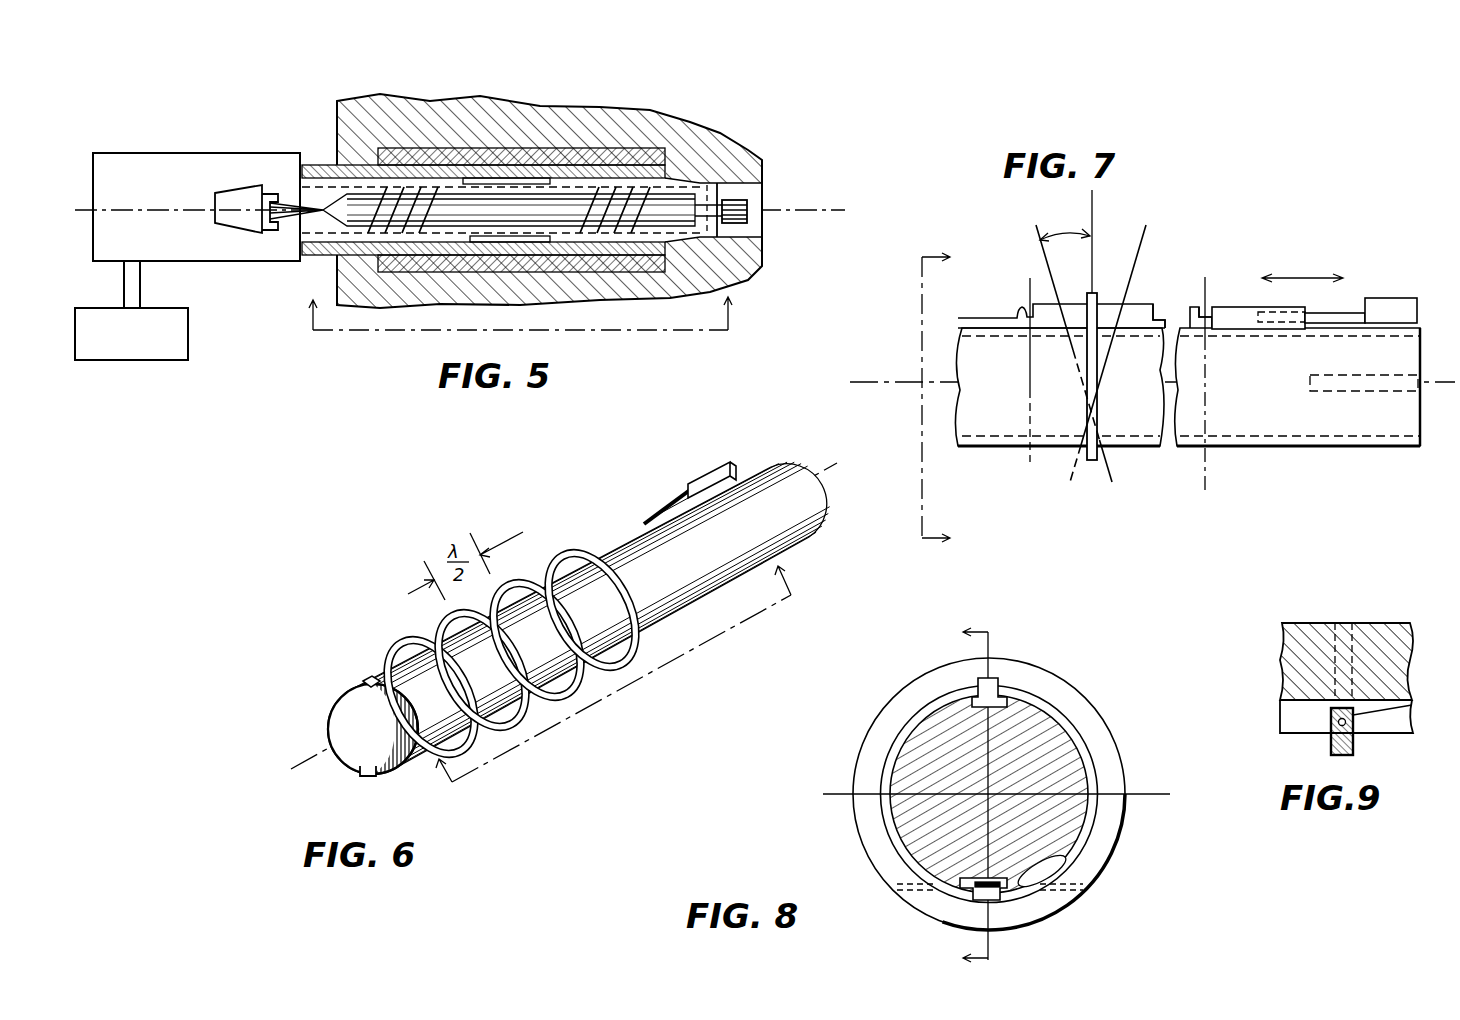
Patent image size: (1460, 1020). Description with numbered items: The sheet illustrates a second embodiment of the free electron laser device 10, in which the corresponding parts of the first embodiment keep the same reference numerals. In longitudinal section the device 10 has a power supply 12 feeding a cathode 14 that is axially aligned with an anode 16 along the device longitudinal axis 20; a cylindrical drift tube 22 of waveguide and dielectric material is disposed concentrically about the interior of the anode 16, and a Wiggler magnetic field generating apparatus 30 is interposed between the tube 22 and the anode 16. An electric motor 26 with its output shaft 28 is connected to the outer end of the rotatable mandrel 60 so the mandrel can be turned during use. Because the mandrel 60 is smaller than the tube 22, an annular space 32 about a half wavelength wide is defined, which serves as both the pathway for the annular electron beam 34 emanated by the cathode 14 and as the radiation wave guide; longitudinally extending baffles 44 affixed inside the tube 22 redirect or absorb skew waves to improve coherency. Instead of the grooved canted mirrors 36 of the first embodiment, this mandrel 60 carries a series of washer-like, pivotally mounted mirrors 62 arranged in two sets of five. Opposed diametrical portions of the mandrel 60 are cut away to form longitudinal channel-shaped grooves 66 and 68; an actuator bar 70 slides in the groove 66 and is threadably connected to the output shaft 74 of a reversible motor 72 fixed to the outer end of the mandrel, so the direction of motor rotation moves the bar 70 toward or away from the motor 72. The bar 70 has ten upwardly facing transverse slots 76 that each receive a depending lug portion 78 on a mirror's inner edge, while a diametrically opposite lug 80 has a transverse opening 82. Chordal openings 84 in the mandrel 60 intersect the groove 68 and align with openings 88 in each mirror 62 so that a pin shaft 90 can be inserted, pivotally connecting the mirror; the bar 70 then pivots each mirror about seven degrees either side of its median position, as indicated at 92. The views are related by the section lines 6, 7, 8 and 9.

In FIG. 5, the free electron laser device 10 is at (298, 101).
In FIG. 5, the power supply 12 is at (142, 342).
In FIG. 5, the cathode 14 is at (218, 205).
In FIG. 5, the anode 16 is at (603, 115).
In FIG. 5, the device longitudinal axis 20 is at (823, 196).
In FIG. 5, the cylindrical drift tube 22 is at (328, 258).
In FIG. 5, the electric motor 26 is at (760, 186).
In FIG. 5, the output shaft 28 is at (748, 215).
In FIG. 5, the Wiggler magnetic field generating apparatus 30 is at (640, 150).
In FIG. 5, the annular space 32 is at (688, 246).
In FIG. 5, the electron beam 34 is at (470, 183).
In FIG. 7, the canted mirrors 36 is at (1097, 352).
In FIG. 8, the canted mirrors 36 is at (875, 858).
In FIG. 5, the baffles 44 is at (527, 183).
In FIG. 5, the mandrel 60 is at (690, 196).
In FIG. 6, the mandrel 60 is at (822, 500).
In FIG. 7, the mandrel 60 is at (1418, 408).
In FIG. 8, the mandrel 60 is at (1043, 764).
In FIG. 9, the mandrel 60 is at (1385, 600).
In FIG. 5, the pivotally mounted mirrors 62 is at (385, 190).
In FIG. 6, the pivotally mounted mirrors 62 is at (640, 620).
In FIG. 7, the pivotally mounted mirrors 62 is at (1110, 484).
In FIG. 8, the pivotally mounted mirrors 62 is at (873, 742).
In FIG. 9, the pivotally mounted mirrors 62 is at (1353, 738).
In FIG. 6, the channel-shaped groove 66 is at (366, 677).
In FIG. 7, the channel-shaped groove 66 is at (1160, 312).
In FIG. 8, the channel-shaped groove 66 is at (972, 690).
In FIG. 6, the channel-shaped groove 68 is at (366, 772).
In FIG. 8, the channel-shaped groove 68 is at (985, 880).
In FIG. 9, the channel-shaped groove 68 is at (1290, 713).
In FIG. 6, the actuator bar 70 is at (638, 528).
In FIG. 7, the actuator bar 70 is at (1240, 306).
In FIG. 8, the actuator bar 70 is at (1005, 690).
In FIG. 6, the reversible motor 72 is at (708, 466).
In FIG. 7, the reversible motor 72 is at (1405, 283).
In FIG. 6, the motor output shaft 74 is at (668, 500).
In FIG. 7, the motor output shaft 74 is at (1345, 306).
In FIG. 7, the transverse slots 76 is at (1209, 298).
In FIG. 8, the depending lug portion 78 is at (990, 680).
In FIG. 8, the lug 80 is at (975, 895).
In FIG. 9, the lug 80 is at (1412, 705).
In FIG. 9, the transverse opening 82 is at (1333, 733).
In FIG. 7, the transverse chordal openings 84 is at (1030, 446).
In FIG. 8, the transverse chordal openings 84 is at (1066, 866).
In FIG. 8, the chordal openings 88 is at (900, 887).
In FIG. 7, the pin shaft 90 is at (1098, 447).
In FIG. 7, the pivot angle 92 is at (1065, 226).
In FIG. 5, the section line 6— 6 is at (518, 312).
In FIG. 6, the section line 7— 7 is at (609, 670).
In FIG. 7, the section line 8— 8 is at (945, 398).
In FIG. 8, the section line 9— 9 is at (962, 796).